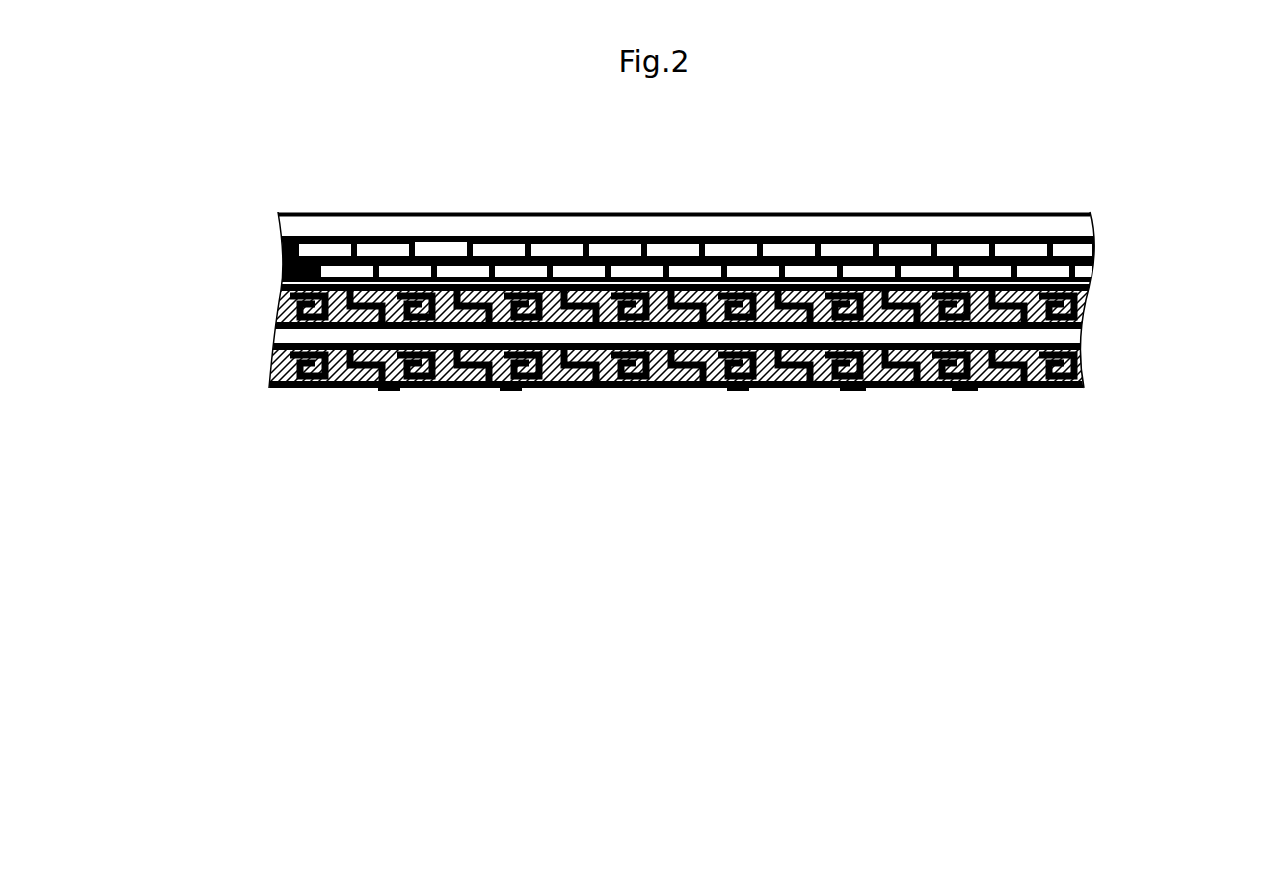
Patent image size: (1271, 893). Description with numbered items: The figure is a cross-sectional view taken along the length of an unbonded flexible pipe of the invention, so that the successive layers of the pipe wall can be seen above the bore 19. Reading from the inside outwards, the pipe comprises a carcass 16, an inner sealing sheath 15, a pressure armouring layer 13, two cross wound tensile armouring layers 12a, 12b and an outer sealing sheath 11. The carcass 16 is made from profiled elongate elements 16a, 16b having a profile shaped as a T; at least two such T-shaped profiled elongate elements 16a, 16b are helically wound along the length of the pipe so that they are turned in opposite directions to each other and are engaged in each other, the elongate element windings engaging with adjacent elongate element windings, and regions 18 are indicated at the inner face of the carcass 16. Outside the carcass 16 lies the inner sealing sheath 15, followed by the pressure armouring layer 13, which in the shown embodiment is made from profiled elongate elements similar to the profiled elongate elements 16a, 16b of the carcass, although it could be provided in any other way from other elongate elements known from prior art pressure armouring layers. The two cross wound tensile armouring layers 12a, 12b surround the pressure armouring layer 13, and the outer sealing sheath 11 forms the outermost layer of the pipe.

The outer sealing sheath 11 is at (393, 218).
The tensile armouring layer 12a is at (278, 272).
The tensile armouring layer 12b is at (285, 248).
The pressure armouring layer 13 is at (1083, 305).
The inner sealing sheath 15 is at (275, 337).
The carcass 16 is at (665, 350).
The profiled elongate element 16a is at (448, 383).
The profiled elongate element 16b is at (378, 383).
The grooves 18 is at (952, 390).
The bore 19 is at (782, 397).